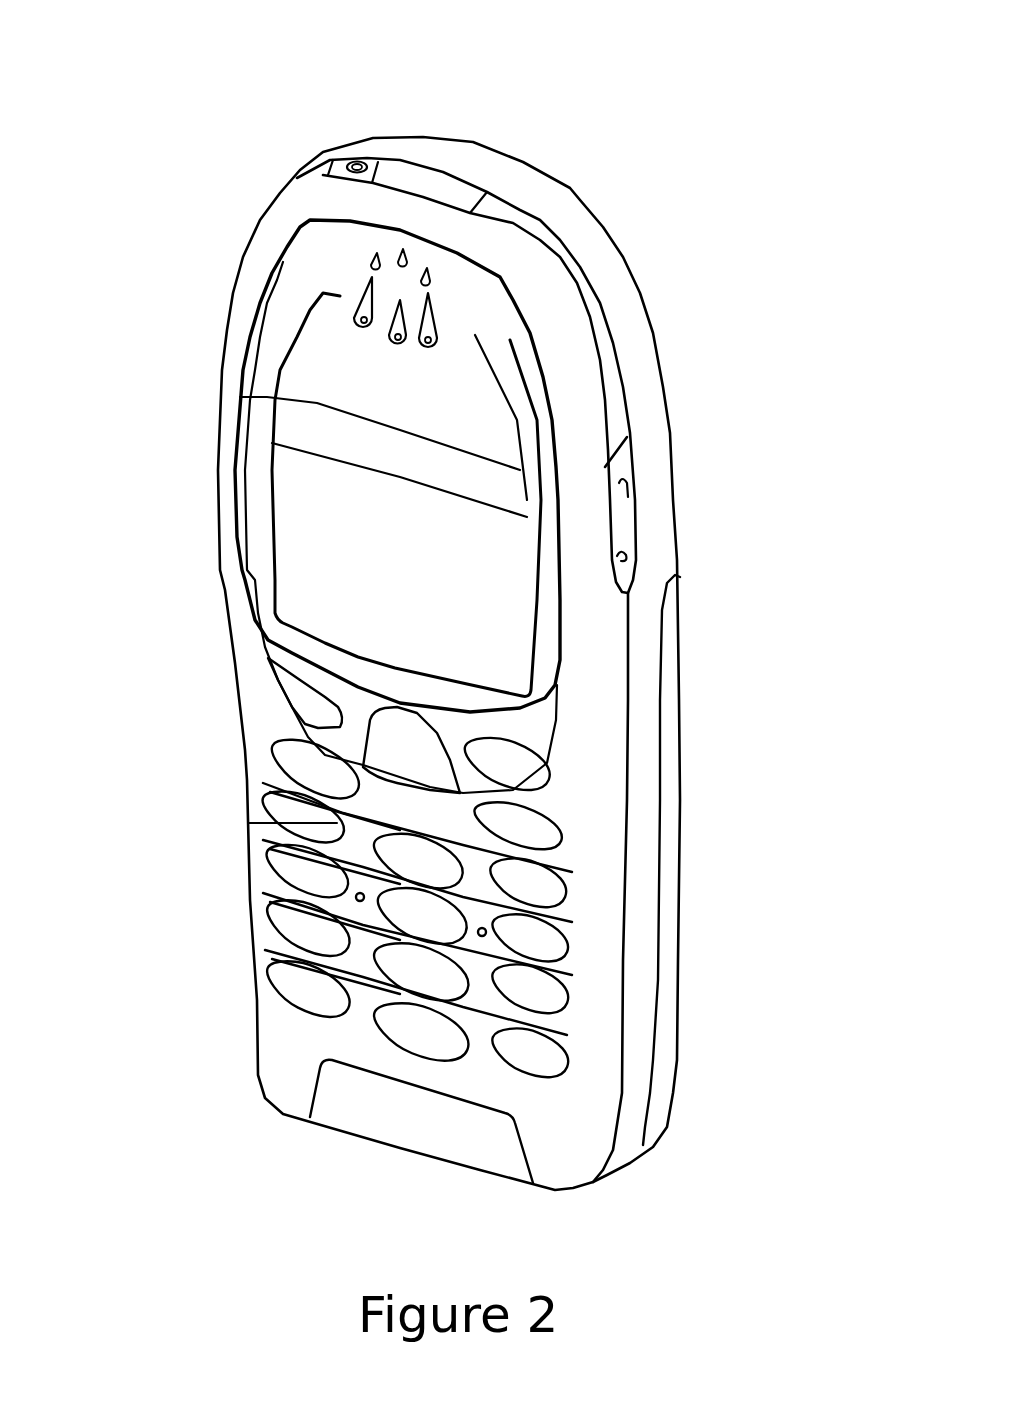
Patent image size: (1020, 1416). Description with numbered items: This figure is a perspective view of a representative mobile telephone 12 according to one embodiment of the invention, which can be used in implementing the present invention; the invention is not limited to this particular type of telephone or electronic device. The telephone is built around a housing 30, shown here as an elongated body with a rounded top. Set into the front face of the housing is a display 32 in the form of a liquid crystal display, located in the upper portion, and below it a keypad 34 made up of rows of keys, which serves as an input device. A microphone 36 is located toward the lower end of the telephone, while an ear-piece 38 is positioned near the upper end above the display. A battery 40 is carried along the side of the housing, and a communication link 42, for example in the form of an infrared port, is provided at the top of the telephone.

The mobile telephone 12 is at (712, 277).
The housing 30 is at (643, 388).
The display 32 is at (513, 583).
The keypad 34 is at (550, 1067).
The microphone 36 is at (387, 1098).
The ear-piece 38 is at (382, 300).
The battery 40 is at (665, 1022).
The communication link 42 is at (428, 190).